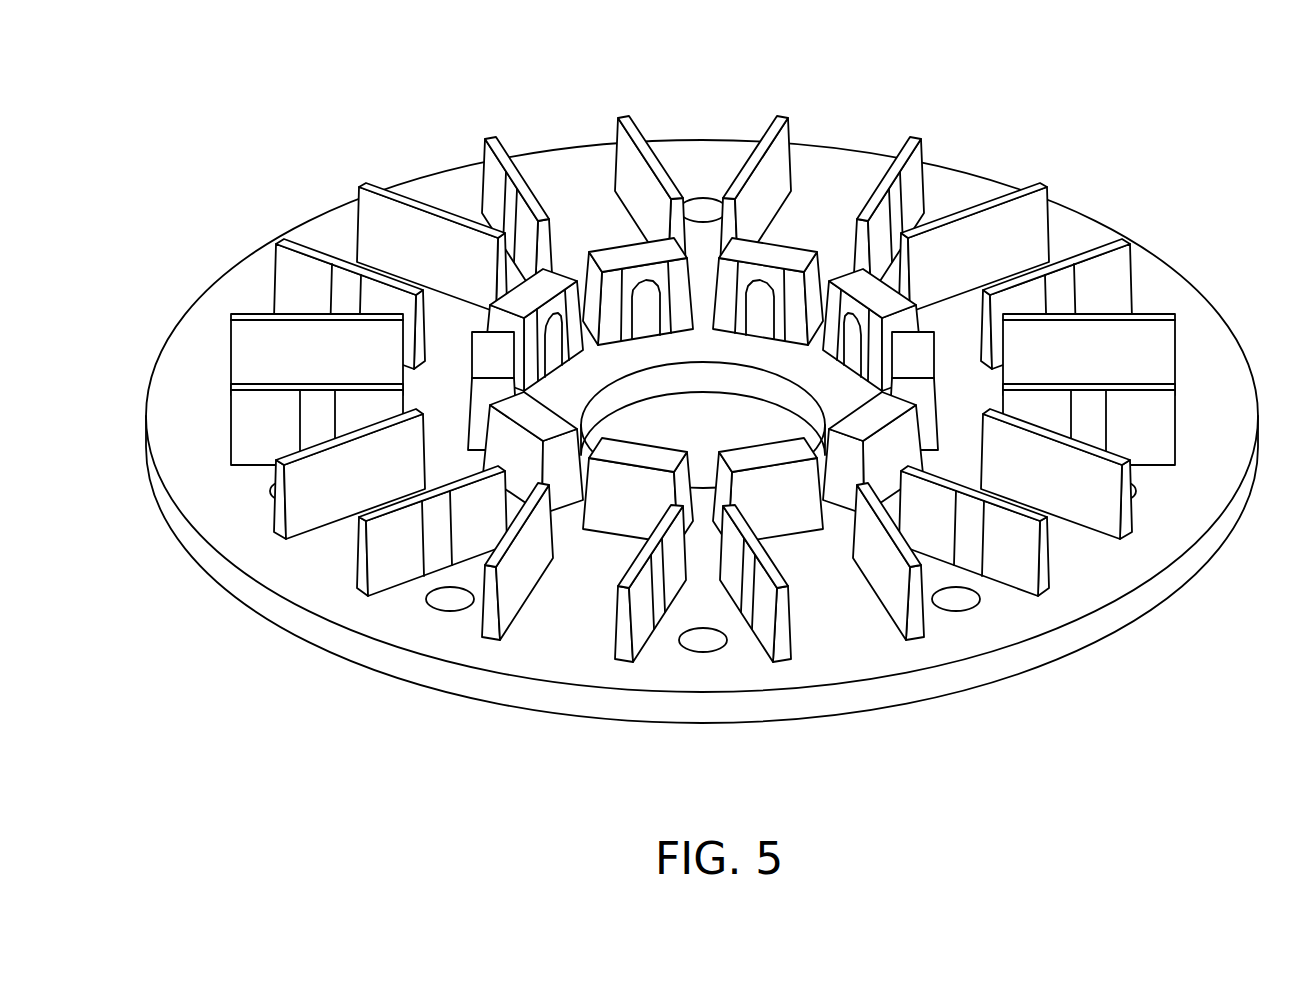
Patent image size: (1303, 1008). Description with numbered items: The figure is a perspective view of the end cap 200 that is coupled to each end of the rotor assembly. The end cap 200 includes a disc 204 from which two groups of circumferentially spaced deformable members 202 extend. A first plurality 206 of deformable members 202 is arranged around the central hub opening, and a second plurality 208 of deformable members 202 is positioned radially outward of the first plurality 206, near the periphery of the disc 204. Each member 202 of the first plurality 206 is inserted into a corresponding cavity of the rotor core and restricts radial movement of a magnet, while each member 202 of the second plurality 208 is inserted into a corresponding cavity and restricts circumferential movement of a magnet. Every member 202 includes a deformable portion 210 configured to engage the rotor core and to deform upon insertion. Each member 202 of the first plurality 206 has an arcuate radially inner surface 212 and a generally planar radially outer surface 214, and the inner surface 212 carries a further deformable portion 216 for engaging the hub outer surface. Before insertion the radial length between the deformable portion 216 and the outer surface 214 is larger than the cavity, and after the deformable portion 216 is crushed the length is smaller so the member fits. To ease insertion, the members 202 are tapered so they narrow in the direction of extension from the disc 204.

The end cap 200 is at (669, 414).
The deformable member 202 is at (938, 207).
The disc 204 is at (669, 464).
The first plurality of deformable members 206 is at (616, 210).
The second plurality of deformable members 208 is at (205, 435).
The deformable portion 210 is at (535, 212).
The arcuate radially inner surface 212 is at (640, 298).
The generally planar radially outer surface 214 is at (791, 199).
The deformable portion 216 is at (772, 287).